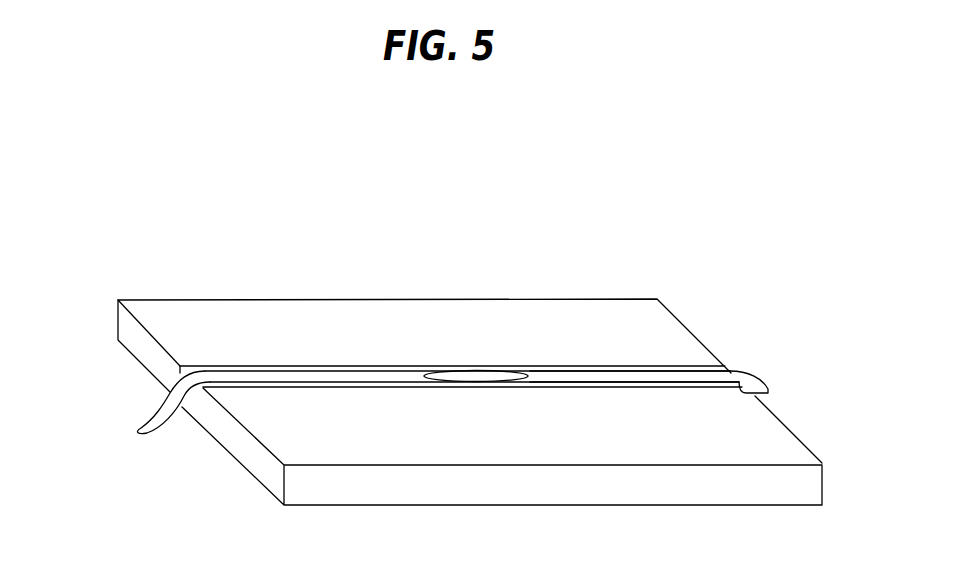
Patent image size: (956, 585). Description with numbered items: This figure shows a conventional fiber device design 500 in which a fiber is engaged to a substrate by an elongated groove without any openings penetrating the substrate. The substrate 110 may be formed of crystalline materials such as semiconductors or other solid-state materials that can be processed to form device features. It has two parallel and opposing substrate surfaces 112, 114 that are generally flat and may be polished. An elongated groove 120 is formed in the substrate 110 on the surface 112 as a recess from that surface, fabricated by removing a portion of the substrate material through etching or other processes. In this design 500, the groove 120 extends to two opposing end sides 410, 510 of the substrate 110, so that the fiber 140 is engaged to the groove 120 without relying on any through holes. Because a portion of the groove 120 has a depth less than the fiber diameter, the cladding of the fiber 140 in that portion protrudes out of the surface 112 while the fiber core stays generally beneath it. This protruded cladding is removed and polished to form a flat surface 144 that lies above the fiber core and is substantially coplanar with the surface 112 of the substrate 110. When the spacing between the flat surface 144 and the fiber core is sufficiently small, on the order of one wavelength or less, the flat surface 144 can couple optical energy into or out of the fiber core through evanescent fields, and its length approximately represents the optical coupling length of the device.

The design 500 is at (518, 237).
The substrate 110 is at (123, 330).
The substrate surface 112 is at (166, 316).
The substrate surface 114 is at (130, 355).
The elongated groove 120 is at (420, 365).
The flat surface 144 is at (484, 377).
The fiber 140 is at (554, 376).
The end side 410 is at (238, 435).
The end side 510 is at (812, 443).